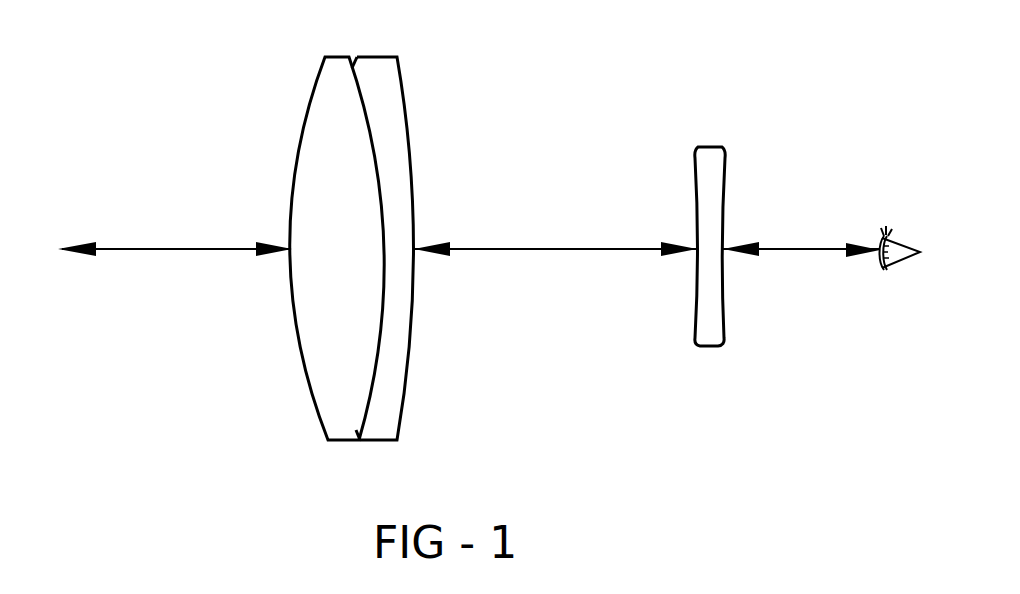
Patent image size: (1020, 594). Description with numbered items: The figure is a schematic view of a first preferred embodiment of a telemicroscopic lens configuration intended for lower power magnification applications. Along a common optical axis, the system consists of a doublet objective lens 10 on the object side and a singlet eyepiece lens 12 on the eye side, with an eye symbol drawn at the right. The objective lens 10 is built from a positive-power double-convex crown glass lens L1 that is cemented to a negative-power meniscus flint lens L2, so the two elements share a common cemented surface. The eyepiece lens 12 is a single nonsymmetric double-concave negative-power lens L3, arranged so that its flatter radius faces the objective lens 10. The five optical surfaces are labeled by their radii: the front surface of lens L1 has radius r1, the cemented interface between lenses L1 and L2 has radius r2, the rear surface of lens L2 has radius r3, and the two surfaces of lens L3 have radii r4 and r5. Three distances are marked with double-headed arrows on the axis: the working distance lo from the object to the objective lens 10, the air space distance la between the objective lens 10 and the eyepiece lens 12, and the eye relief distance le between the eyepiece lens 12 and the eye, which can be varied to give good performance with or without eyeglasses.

The doublet objective lens 10 is at (356, 244).
The singlet eyepiece lens 12 is at (715, 218).
The positive-power double-convex crown glass lens L1 is at (294, 147).
The negative-power meniscus flint lens L2 is at (411, 133).
The nonsymmetric double-concave negative-power lens L3 is at (726, 166).
The first lens surface radius r1 is at (307, 388).
The second lens surface radius r2 is at (377, 368).
The third lens surface radius r3 is at (413, 308).
The fourth lens surface radius r4 is at (695, 306).
The fifth lens surface radius r5 is at (725, 307).
The working distance lo is at (168, 298).
The air space distance la is at (550, 300).
The eye relief distance le is at (799, 301).